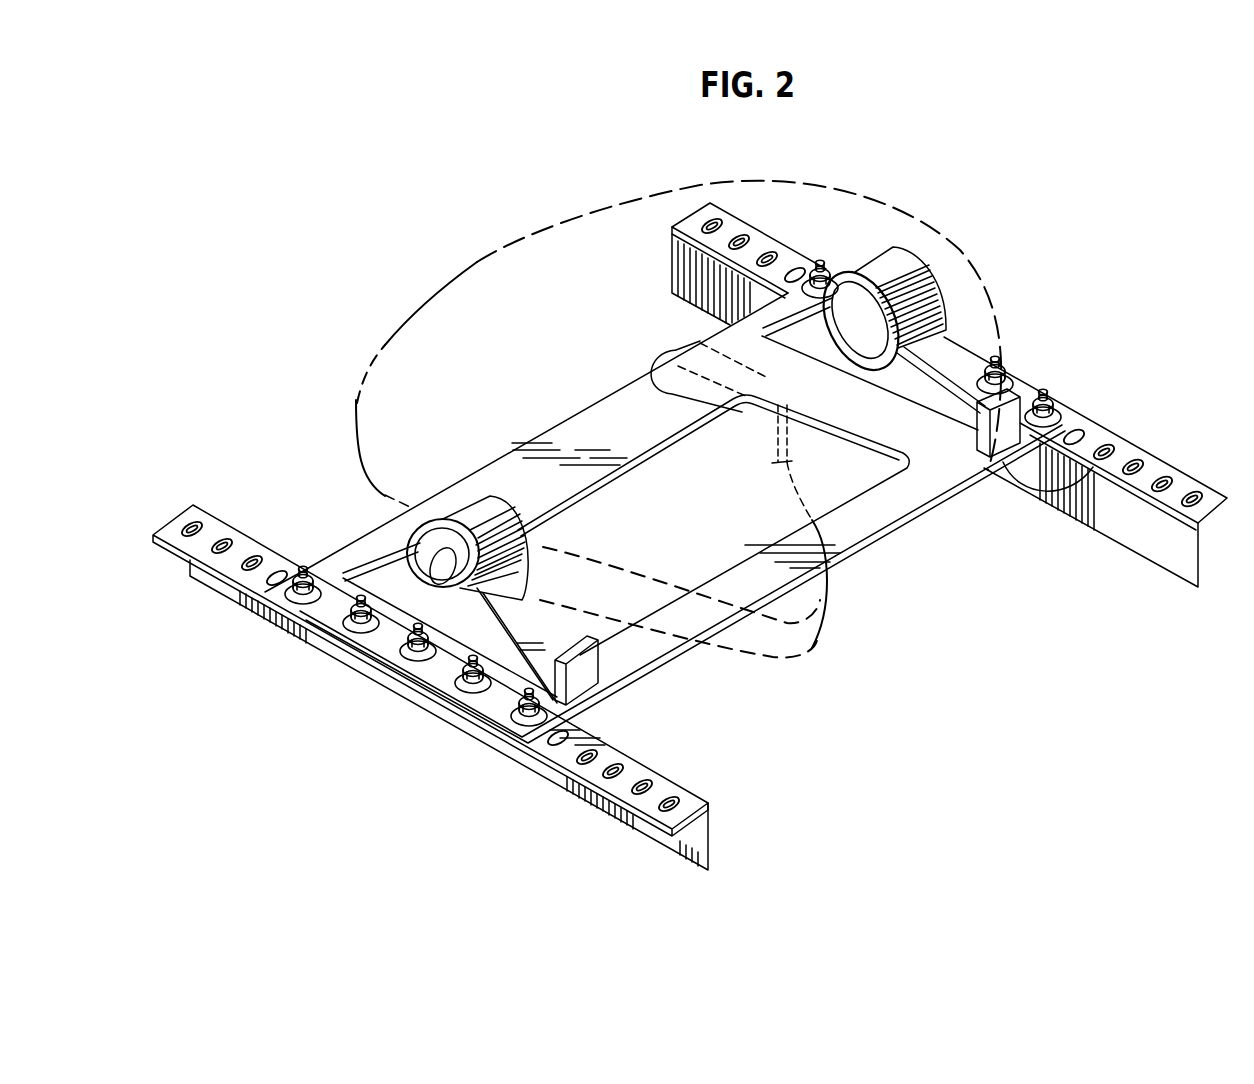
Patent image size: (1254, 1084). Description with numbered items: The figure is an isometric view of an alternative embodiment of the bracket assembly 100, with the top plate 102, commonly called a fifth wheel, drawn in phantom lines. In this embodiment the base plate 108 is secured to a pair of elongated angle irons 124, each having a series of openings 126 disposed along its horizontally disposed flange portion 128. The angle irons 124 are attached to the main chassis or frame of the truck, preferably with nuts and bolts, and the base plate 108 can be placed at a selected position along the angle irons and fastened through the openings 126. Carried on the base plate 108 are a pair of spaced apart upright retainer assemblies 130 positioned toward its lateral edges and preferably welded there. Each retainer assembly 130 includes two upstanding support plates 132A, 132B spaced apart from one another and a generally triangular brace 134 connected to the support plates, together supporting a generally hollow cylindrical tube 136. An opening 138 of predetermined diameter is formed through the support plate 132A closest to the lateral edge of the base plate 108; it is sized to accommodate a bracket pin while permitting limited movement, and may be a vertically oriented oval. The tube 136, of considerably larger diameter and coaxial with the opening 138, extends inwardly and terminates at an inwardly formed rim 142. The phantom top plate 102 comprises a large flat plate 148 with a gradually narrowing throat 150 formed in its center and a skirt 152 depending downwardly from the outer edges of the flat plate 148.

The bracket assembly 100 is at (919, 167).
The top plate 102 is at (905, 206).
The base plate 108 is at (888, 512).
The elongated angle irons 124 is at (662, 782).
The openings 126 is at (614, 760).
The horizontally disposed flange portions 128 is at (700, 800).
The upright retainer assemblies 130 is at (366, 586).
The support plate 132A is at (467, 633).
The support plate 132B is at (905, 385).
The triangular brace 134 is at (497, 668).
The hollow cylindrical tube 136 is at (927, 297).
The opening 138 is at (413, 558).
The inwardly formed rim 142 is at (943, 296).
The flat plate 148 is at (519, 338).
The throat 150 is at (640, 283).
The skirt 152 is at (360, 480).